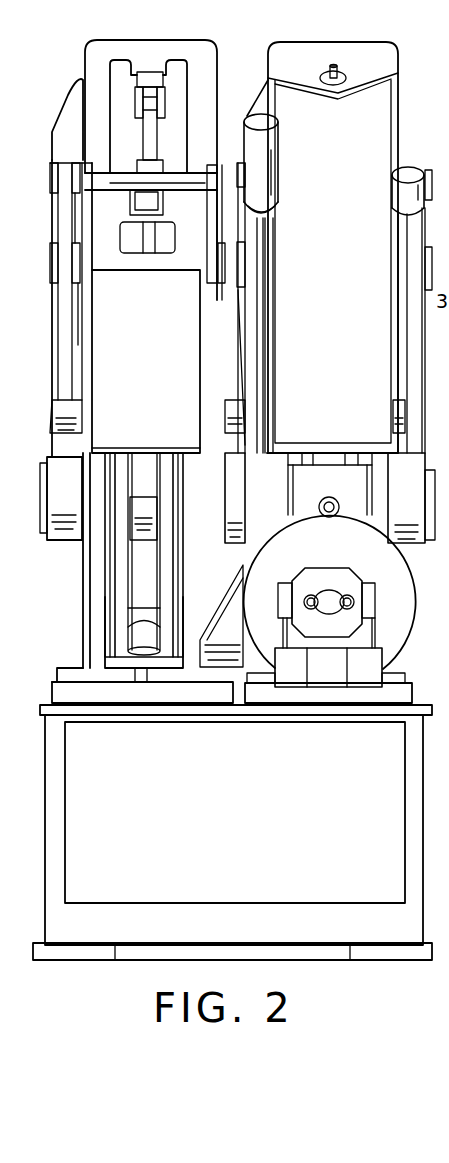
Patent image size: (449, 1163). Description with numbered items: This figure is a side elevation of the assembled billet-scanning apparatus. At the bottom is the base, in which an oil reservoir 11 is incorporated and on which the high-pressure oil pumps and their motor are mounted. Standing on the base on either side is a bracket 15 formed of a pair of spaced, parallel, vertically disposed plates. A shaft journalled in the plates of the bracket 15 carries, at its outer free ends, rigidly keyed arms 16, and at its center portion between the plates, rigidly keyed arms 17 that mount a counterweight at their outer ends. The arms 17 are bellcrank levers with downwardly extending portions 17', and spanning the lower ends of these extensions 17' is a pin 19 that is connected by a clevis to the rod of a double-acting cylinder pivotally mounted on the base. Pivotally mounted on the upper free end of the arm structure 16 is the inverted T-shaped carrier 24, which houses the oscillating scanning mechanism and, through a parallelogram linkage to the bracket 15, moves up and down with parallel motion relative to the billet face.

The oil reservoir 11 is at (242, 815).
The bracket 15 is at (93, 562).
The arms 16 is at (60, 447).
The arms 17 is at (144, 555).
The downwardly extending portions 17' is at (145, 615).
The pin 19 is at (127, 643).
The carrier 24 is at (373, 60).